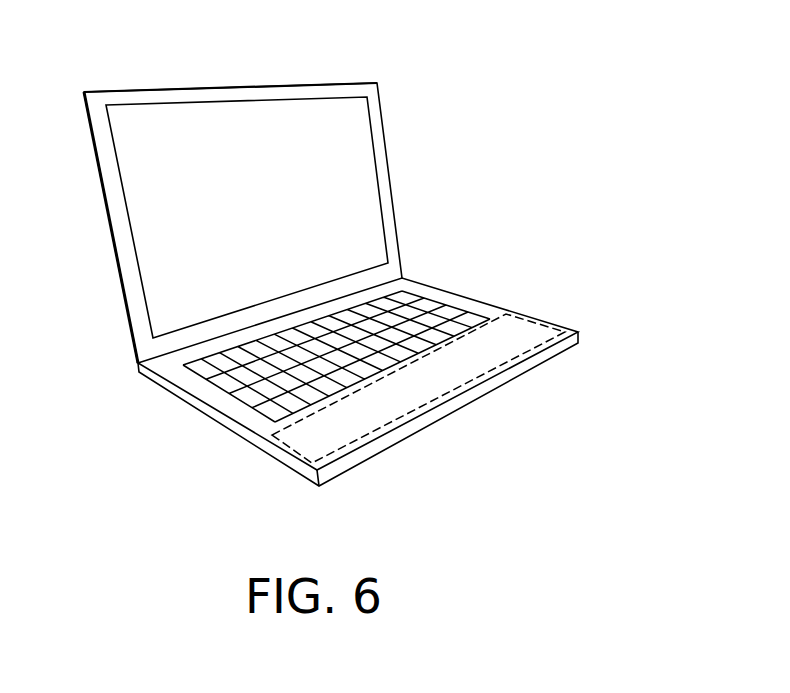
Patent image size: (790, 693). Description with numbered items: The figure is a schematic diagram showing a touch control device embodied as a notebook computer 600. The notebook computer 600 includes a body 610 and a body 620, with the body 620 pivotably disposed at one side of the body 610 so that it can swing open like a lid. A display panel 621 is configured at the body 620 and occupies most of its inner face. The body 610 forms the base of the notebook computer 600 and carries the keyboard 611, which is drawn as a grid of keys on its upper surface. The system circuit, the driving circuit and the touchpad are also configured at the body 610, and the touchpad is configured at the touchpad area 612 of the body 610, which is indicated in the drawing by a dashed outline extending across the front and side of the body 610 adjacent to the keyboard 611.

The notebook computer 600 is at (314, 300).
The body 610 is at (339, 397).
The keyboard 611 is at (216, 399).
The touchpad area 612 is at (277, 443).
The body 620 is at (219, 223).
The display panel 621 is at (143, 213).